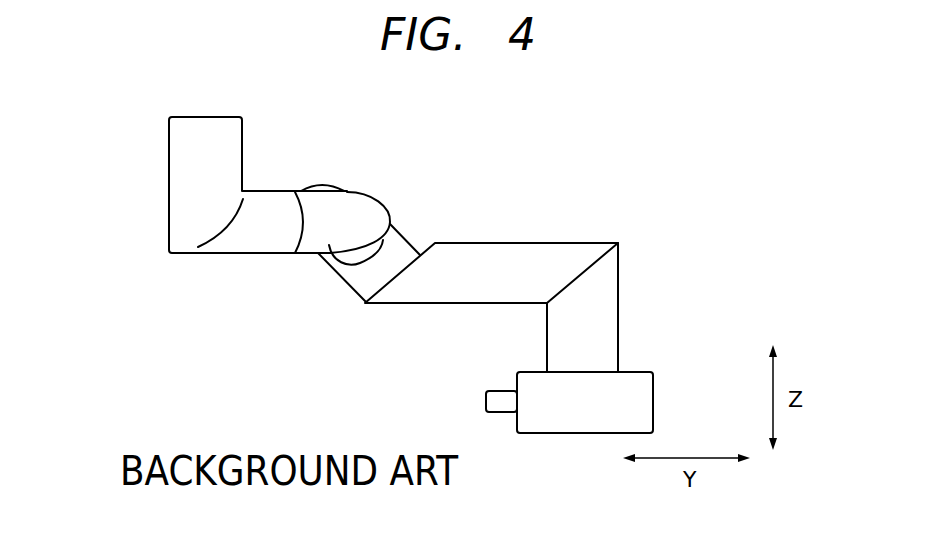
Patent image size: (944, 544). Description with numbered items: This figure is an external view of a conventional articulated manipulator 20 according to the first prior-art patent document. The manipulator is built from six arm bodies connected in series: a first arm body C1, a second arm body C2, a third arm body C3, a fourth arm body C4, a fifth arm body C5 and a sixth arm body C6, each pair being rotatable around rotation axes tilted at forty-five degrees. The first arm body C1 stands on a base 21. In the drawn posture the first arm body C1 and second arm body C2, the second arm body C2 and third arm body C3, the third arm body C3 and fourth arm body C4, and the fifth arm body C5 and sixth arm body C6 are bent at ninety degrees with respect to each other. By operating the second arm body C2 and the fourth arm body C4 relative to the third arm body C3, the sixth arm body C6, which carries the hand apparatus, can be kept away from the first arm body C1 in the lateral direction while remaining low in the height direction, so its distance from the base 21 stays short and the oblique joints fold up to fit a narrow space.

The articulated manipulator 20 is at (395, 143).
The base 21 is at (638, 398).
The first arm body C1 is at (620, 329).
The second arm body C2 is at (515, 253).
The third arm body C3 is at (413, 250).
The fourth arm body C4 is at (330, 243).
The fifth arm body C5 is at (257, 243).
The sixth arm body C6 is at (228, 177).